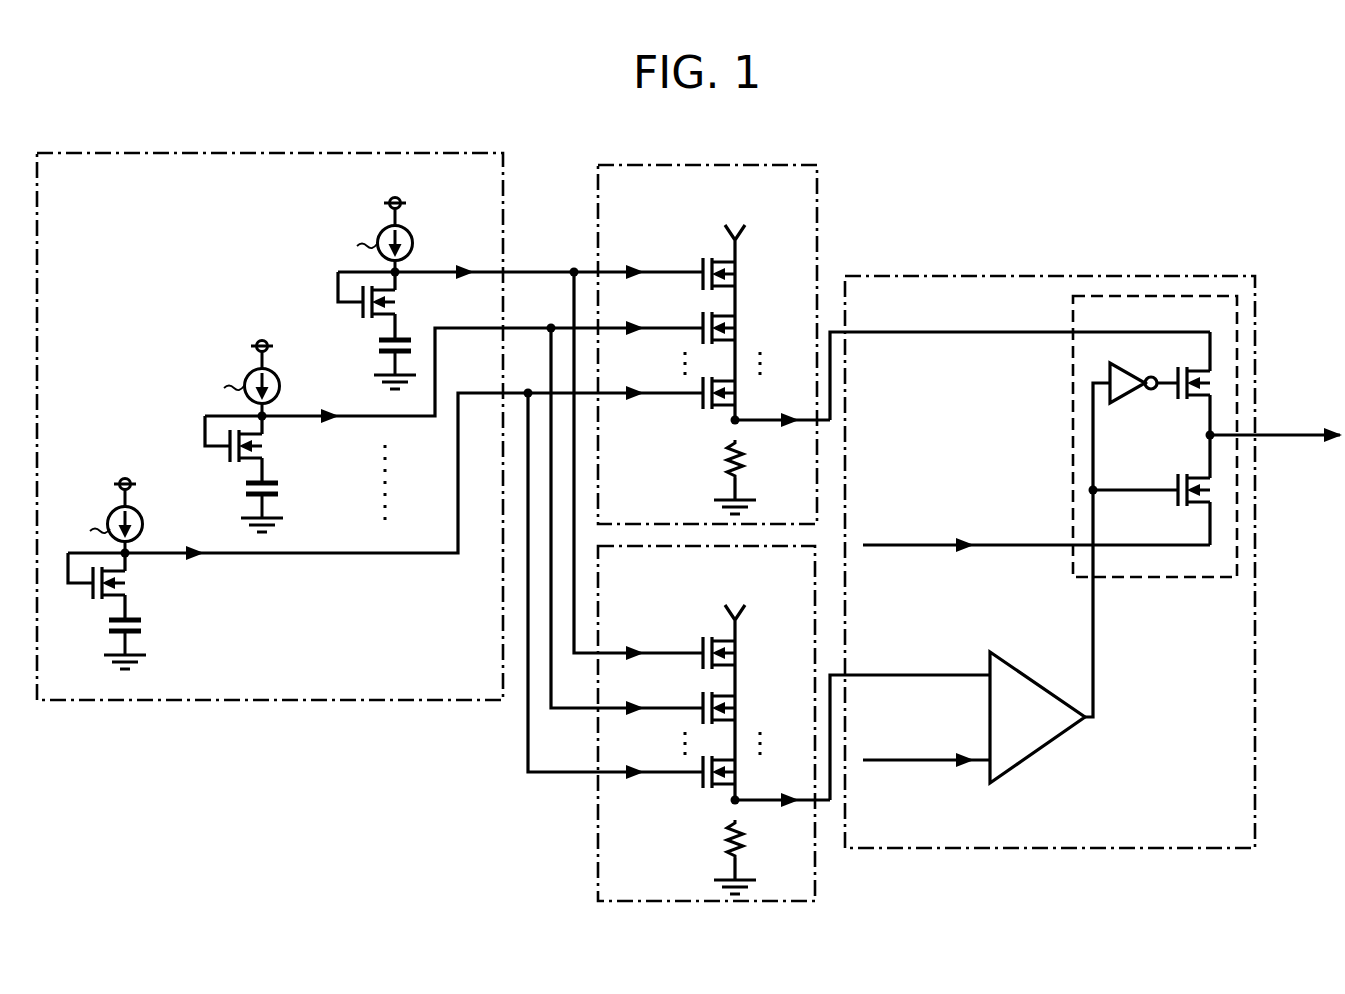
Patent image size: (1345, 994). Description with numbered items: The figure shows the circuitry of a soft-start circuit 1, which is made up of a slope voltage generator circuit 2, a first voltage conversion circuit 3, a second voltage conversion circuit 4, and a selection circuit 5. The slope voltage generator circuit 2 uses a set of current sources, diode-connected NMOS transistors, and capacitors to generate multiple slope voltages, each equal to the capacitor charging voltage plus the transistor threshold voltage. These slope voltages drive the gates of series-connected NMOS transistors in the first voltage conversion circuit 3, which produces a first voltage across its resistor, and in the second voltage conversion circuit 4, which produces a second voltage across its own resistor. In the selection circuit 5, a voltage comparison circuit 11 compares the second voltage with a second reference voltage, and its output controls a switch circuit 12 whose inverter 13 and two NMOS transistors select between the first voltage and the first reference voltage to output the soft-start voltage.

The soft-start circuit 1 is at (1062, 150).
The slope voltage generator circuit 2 is at (247, 720).
The first voltage conversion circuit 3 is at (826, 188).
The second voltage conversion circuit 4 is at (590, 820).
The selection circuit 5 is at (1141, 270).
The voltage comparison circuit 11 is at (1023, 674).
The switch circuit 12 is at (1066, 408).
The inverter 13 is at (1123, 405).